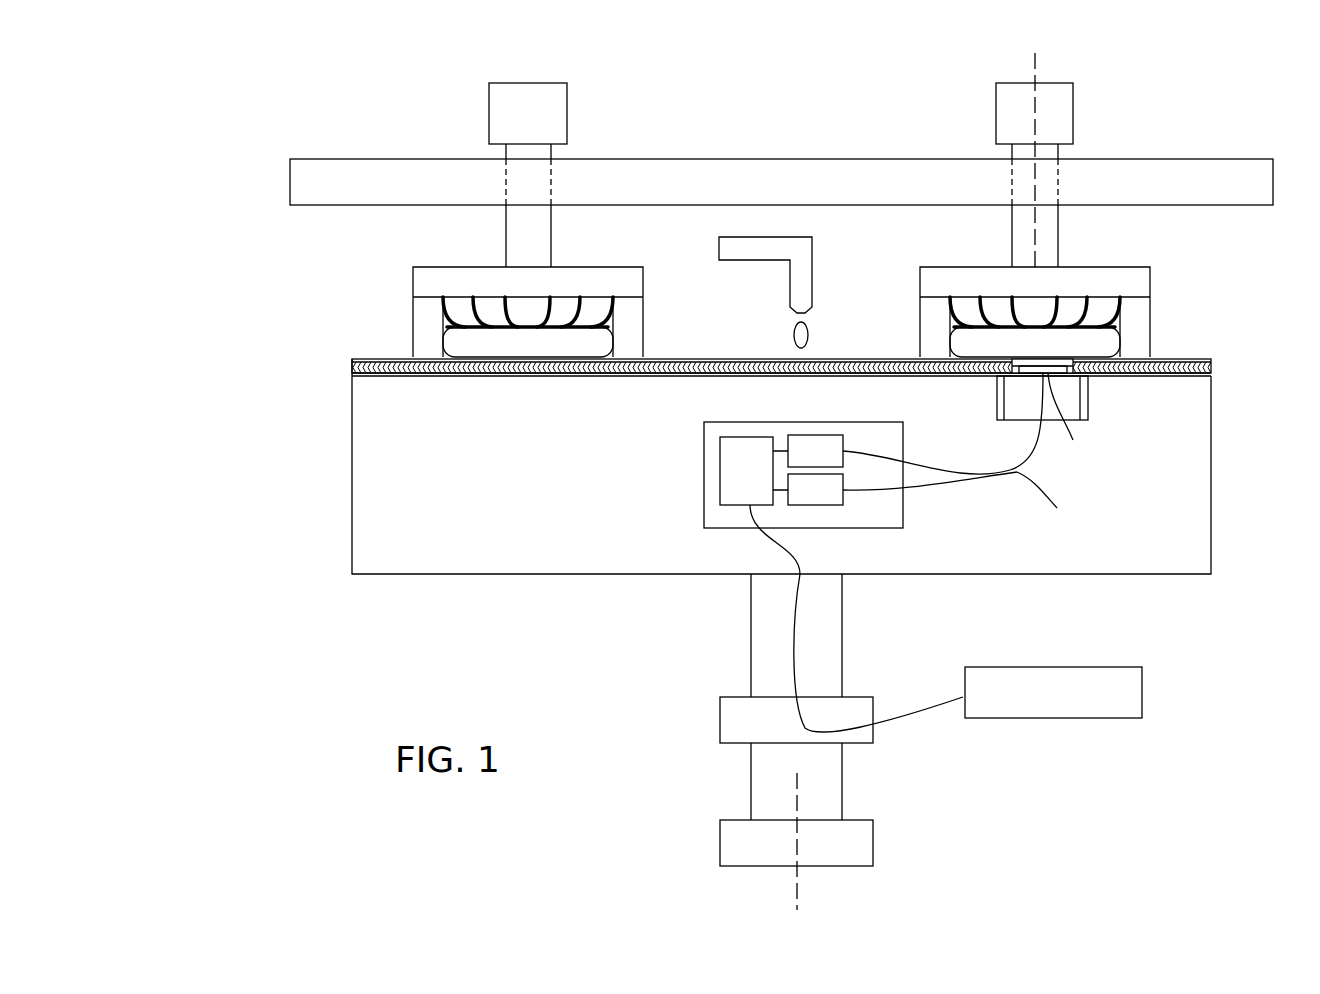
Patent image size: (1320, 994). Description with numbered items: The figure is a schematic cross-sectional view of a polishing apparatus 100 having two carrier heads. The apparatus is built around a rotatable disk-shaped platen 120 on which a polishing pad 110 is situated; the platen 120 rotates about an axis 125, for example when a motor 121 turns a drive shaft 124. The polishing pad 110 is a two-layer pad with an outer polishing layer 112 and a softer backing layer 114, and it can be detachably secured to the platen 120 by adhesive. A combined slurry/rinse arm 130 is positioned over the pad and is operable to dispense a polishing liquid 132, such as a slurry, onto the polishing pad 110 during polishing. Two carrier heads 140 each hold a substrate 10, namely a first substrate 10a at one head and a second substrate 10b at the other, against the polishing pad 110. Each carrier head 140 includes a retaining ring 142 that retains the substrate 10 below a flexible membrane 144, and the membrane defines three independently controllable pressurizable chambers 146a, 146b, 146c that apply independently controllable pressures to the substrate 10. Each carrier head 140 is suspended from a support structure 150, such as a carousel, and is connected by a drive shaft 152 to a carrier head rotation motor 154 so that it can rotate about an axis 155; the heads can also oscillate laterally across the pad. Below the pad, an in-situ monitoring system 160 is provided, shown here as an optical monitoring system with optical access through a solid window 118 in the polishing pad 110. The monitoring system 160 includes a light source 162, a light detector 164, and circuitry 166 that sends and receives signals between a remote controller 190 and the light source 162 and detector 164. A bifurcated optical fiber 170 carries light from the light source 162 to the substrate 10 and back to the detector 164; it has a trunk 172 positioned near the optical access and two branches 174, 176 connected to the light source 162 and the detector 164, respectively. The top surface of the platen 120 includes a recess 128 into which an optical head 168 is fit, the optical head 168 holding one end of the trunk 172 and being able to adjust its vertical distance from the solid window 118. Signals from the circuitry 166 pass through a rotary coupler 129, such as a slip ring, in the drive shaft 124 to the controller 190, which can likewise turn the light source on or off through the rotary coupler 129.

The polishing apparatus 100 is at (340, 115).
The substrate 10 is at (1035, 342).
The first substrate 10a is at (1035, 342).
The second substrate 10b is at (528, 342).
The polishing pad 110 is at (1200, 340).
The outer polishing layer 112 is at (1213, 363).
The backing layer 114 is at (1213, 376).
The solid window 118 is at (1068, 420).
The platen 120 is at (1213, 503).
The motor 121 is at (873, 850).
The drive shaft 124 is at (842, 645).
The axis 125 is at (800, 887).
The recess 128 is at (997, 395).
The rotary coupler 129 is at (720, 730).
The slurry/rinse arm 130 is at (790, 278).
The polishing liquid 132 is at (794, 335).
The carrier head 140 is at (385, 312).
The retaining ring 142 is at (1151, 330).
The flexible membrane 144 is at (1092, 330).
The chamber 146a is at (1035, 312).
The chamber 146b is at (1072, 312).
The chamber 146c is at (1102, 312).
The support structure 150 is at (1240, 160).
The drive shaft 152 is at (1012, 245).
The carrier head rotation motor 154 is at (996, 125).
The axis 155 is at (1037, 63).
The in-situ monitoring system 160 is at (675, 520).
The light source 162 is at (815, 451).
The light detector 164 is at (815, 489).
The circuitry 166 is at (746, 471).
The optical head 168 is at (1083, 405).
The bifurcated optical fiber 170 is at (993, 485).
The trunk 172 is at (1047, 503).
The branch 174 is at (870, 458).
The branch 176 is at (870, 490).
The controller 190 is at (1140, 720).